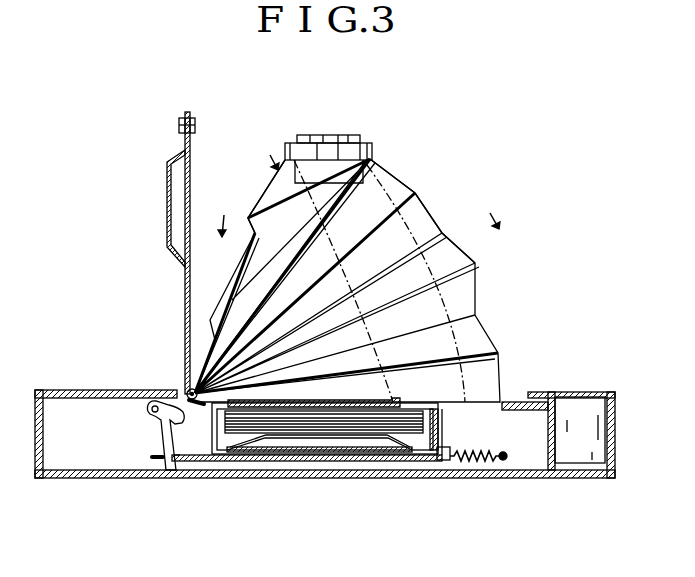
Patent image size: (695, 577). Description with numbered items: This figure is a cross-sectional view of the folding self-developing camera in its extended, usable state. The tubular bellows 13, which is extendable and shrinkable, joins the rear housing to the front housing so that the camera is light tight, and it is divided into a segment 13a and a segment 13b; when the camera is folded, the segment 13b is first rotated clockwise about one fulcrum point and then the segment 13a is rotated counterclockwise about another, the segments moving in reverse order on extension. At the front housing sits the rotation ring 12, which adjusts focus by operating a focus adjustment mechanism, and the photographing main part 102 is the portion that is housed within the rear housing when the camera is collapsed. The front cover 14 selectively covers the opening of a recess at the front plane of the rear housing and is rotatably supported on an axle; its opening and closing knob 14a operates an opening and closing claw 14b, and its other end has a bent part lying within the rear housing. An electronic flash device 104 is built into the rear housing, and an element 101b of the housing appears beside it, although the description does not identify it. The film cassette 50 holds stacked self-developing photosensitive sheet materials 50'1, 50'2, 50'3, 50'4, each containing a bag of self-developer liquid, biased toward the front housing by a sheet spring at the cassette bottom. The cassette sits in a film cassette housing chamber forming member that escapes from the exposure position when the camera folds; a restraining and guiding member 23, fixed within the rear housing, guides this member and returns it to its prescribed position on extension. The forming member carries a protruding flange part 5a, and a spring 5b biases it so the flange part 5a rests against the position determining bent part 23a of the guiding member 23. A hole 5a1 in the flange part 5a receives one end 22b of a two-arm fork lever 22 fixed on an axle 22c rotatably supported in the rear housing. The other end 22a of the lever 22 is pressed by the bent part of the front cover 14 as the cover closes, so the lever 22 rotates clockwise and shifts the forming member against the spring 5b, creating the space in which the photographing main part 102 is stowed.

The rotation ring 12 is at (327, 135).
The photographing main part 102 is at (372, 152).
The bellows 13 is at (476, 265).
The bellows segment 13a is at (262, 198).
The bellows segment 13b is at (432, 212).
The front cover 14 is at (167, 206).
The opening and closing knob 14a is at (179, 124).
The opening and closing claw 14b is at (195, 124).
The two-arm fork lever 22 is at (158, 440).
The lever end 22a is at (168, 390).
The lever end 22b is at (160, 462).
The axle 22c is at (152, 409).
The flange part 5a is at (212, 455).
The hole 5a1 is at (178, 462).
The spring 5b is at (470, 460).
The restraining and guiding member 23 is at (368, 402).
The position determining bent part 23a is at (450, 450).
The film cassette 50 is at (325, 457).
The photosensitive sheet material 50'1 is at (334, 399).
The photosensitive sheet material 50'2 is at (324, 462).
The photosensitive sheet material 50'3 is at (324, 467).
The photosensitive sheet material 50'4 is at (329, 467).
The housing ledge 101b is at (520, 402).
The electronic flash device 104 is at (582, 396).